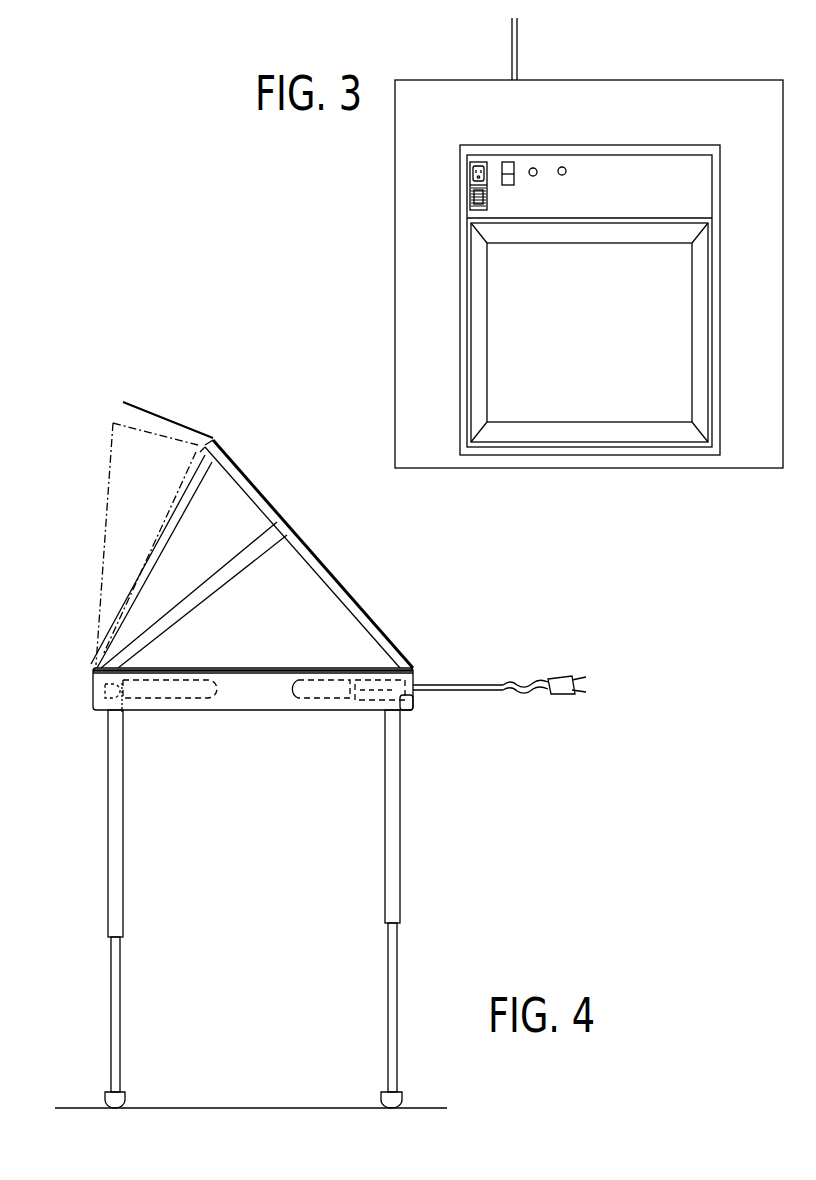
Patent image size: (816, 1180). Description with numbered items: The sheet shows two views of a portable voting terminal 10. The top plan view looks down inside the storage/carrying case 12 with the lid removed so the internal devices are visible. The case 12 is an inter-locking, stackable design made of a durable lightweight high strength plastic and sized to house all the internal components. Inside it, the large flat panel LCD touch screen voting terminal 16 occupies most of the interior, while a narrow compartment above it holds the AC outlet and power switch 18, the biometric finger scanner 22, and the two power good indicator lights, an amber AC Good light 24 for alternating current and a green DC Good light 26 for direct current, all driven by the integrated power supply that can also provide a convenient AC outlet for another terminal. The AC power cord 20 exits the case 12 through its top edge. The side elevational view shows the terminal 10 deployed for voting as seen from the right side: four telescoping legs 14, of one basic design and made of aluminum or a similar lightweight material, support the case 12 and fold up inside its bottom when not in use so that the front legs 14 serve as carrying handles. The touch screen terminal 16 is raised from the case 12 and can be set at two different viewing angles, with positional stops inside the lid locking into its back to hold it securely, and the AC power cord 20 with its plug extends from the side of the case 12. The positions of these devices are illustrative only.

In FIG. 3, the voting terminal 10 is at (322, 271).
In FIG. 4, the voting terminal 10 is at (452, 636).
In FIG. 3, the storage/carrying case 12 is at (713, 470).
In FIG. 4, the storage/carrying case 12 is at (92, 692).
In FIG. 4, the telescoping legs 14 is at (123, 808).
In FIG. 3, the flat panel LCD display screen 16 is at (603, 348).
In FIG. 4, the flat panel LCD display screen 16 is at (200, 598).
In FIG. 3, the AC outlet and power switch 18 is at (470, 200).
In FIG. 3, the AC power cord 20 is at (518, 40).
In FIG. 4, the AC power cord 20 is at (493, 690).
In FIG. 3, the biometric finger scanner 22 is at (512, 163).
In FIG. 3, the AC Good indicator light 24 is at (535, 168).
In FIG. 3, the DC Good indicator light 26 is at (565, 174).